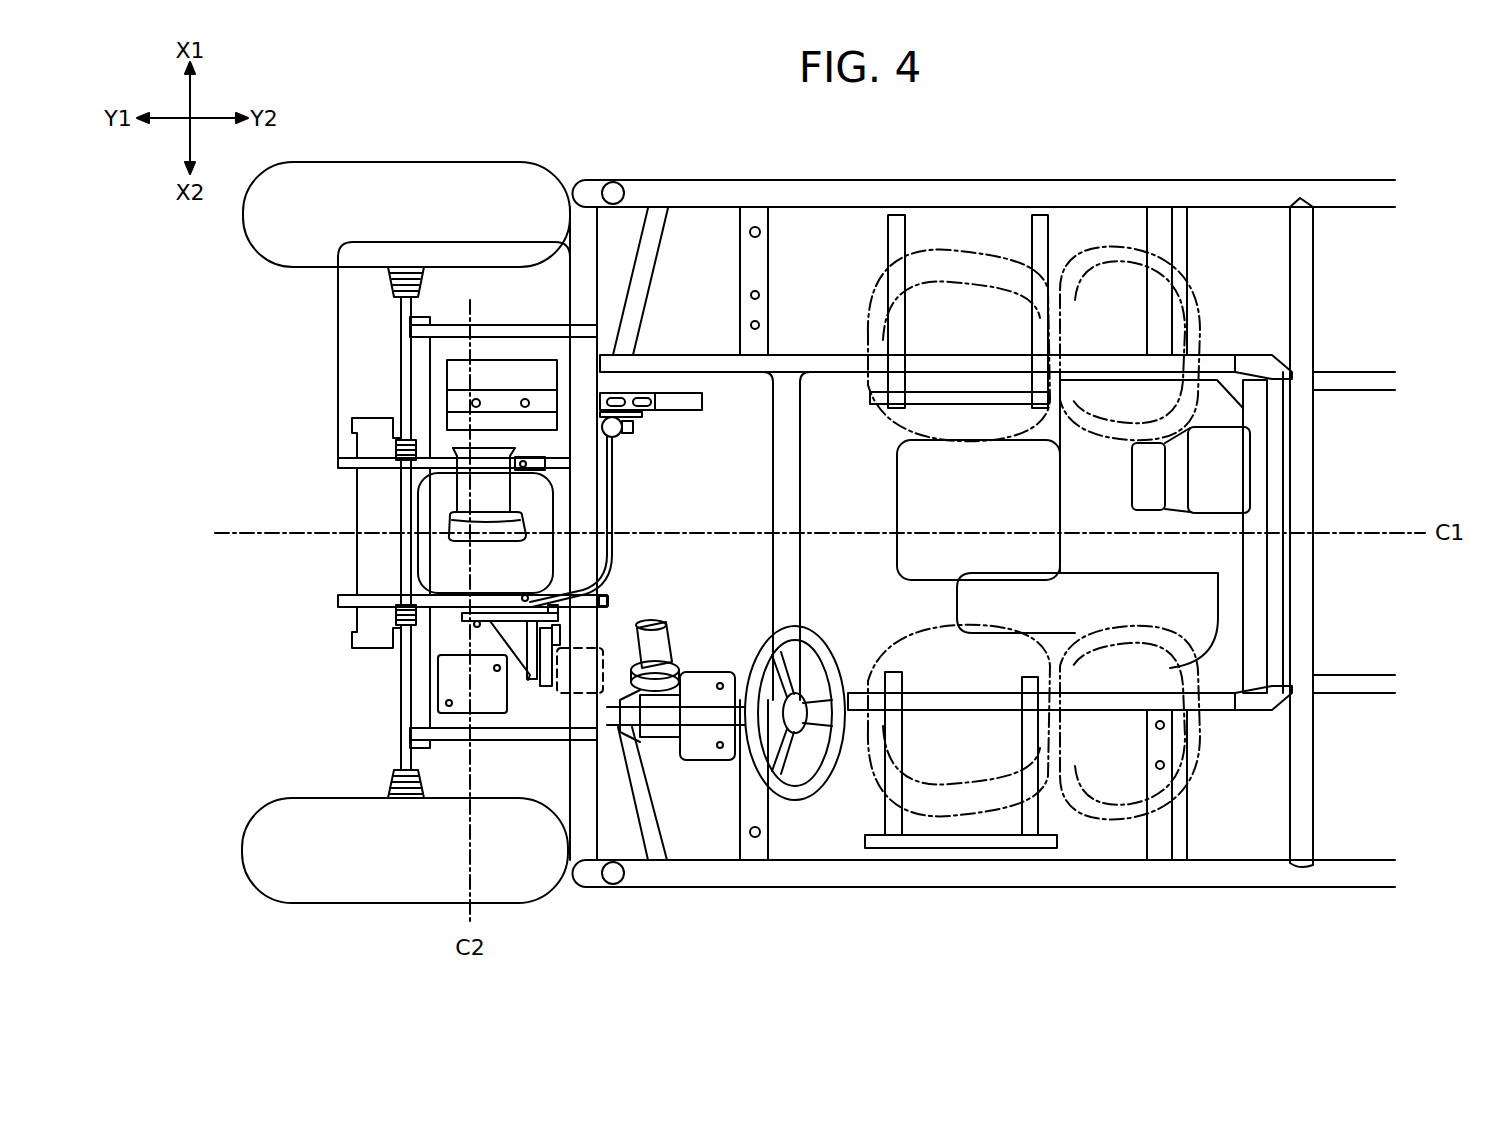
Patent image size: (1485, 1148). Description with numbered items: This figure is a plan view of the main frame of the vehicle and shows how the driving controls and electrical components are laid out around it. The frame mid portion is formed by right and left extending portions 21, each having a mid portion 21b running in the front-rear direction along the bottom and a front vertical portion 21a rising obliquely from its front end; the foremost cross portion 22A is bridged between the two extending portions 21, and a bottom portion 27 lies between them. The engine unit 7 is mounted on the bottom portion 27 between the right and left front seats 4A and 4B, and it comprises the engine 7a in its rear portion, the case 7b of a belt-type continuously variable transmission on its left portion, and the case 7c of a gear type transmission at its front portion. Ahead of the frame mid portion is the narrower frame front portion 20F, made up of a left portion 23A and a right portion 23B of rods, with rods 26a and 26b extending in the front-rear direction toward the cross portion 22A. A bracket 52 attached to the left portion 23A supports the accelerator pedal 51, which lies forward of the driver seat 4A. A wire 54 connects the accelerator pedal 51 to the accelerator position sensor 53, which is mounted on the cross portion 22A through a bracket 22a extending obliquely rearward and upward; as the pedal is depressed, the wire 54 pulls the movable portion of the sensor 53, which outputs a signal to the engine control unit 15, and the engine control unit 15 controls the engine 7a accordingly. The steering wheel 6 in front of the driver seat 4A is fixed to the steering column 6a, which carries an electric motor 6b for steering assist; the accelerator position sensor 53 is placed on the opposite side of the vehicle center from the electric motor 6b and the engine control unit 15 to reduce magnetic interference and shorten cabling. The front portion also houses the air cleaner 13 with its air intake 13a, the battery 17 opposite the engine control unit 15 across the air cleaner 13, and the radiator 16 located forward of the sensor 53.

The driver seat 4A is at (876, 782).
The front seat 4B is at (866, 300).
The steering wheel 6 is at (816, 652).
The steering column 6a is at (722, 700).
The electric motor 6b is at (666, 632).
The engine unit 7 is at (1254, 548).
The engine 7a is at (1243, 474).
The case of a transmission 7b is at (1208, 640).
The case of a transmission 7c is at (896, 484).
The air cleaner 13 is at (420, 512).
The air intake 13a is at (470, 450).
The engine control unit 15 is at (438, 690).
The radiator 16 is at (362, 567).
The battery 17 is at (452, 370).
The frame front portion 20F is at (476, 246).
The extending portion 21 is at (926, 176).
The front vertical portion 21a is at (598, 184).
The mid portion 21b is at (698, 186).
The cross portion 22A is at (583, 298).
The bracket 22a is at (636, 392).
The left portion 23A is at (345, 609).
The right portion 23B is at (345, 456).
The rod 26a is at (497, 742).
The rod 26b is at (487, 332).
The bottom portion 27 is at (1198, 827).
The accelerator pedal 51 is at (586, 690).
The bracket 52 is at (512, 642).
The accelerator position sensor 53 is at (640, 428).
The wire 54 is at (616, 500).